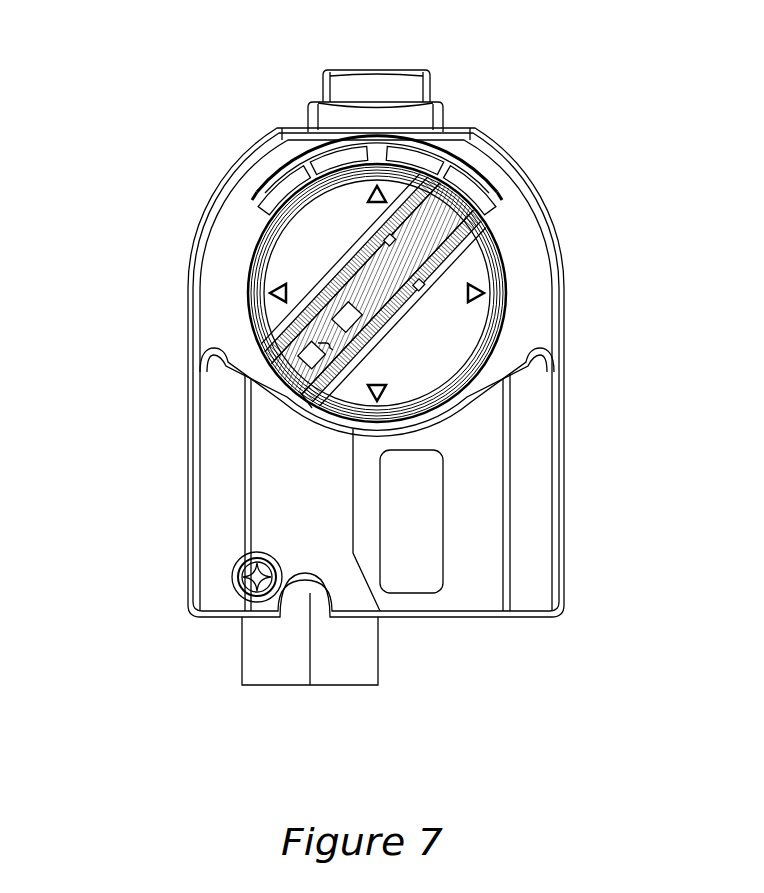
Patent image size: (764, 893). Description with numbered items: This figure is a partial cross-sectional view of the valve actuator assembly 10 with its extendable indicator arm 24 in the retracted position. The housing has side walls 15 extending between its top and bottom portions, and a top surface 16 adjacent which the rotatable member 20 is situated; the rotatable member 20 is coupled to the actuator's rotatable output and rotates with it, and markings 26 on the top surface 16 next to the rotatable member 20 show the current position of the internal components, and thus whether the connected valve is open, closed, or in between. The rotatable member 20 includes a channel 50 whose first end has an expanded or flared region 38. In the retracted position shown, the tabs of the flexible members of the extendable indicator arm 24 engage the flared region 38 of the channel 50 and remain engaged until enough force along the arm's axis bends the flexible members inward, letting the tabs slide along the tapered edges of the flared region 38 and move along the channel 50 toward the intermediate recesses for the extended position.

The valve actuator assembly 10 is at (665, 95).
The side walls 15 is at (566, 290).
The top surface 16 is at (540, 498).
The rotatable member 20 is at (300, 243).
The extendable indicator arm 24 is at (480, 217).
The markings 26 is at (288, 182).
The expanded or flared region 38 is at (312, 402).
The channel 50 is at (320, 345).